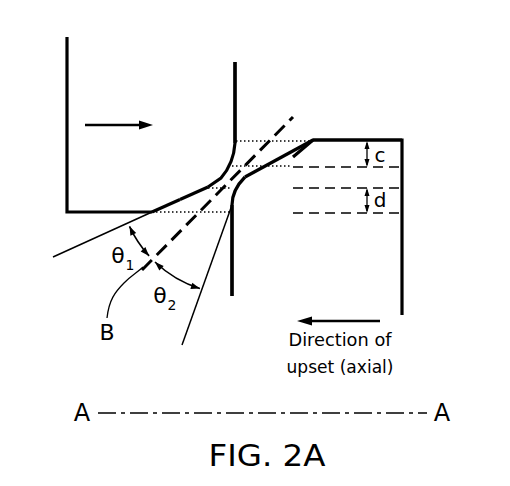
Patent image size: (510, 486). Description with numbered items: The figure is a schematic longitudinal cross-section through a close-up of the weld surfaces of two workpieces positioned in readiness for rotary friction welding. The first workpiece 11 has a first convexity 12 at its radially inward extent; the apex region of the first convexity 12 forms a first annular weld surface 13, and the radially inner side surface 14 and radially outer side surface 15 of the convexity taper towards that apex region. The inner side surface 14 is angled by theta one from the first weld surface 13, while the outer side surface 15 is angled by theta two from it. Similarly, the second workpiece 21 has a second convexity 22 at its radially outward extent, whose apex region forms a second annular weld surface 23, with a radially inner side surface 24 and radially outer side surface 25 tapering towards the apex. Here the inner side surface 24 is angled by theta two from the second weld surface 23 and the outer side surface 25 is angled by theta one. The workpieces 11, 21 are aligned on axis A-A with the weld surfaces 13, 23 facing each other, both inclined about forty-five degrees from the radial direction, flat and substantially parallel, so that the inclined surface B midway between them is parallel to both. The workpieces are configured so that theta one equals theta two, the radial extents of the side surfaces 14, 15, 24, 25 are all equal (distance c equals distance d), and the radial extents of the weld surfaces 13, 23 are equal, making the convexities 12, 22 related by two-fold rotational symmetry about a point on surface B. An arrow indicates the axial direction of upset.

The first workpiece 11 is at (109, 95).
The first convexity 12 is at (194, 190).
The first annular weld surface 13 is at (218, 177).
The radially inner side surface 14 is at (168, 204).
The radially outer side surface 15 is at (236, 150).
The second workpiece 21 is at (359, 302).
The second convexity 22 is at (272, 163).
The second annular weld surface 23 is at (238, 188).
The radially inner side surface 24 is at (236, 204).
The radially outer side surface 25 is at (293, 157).